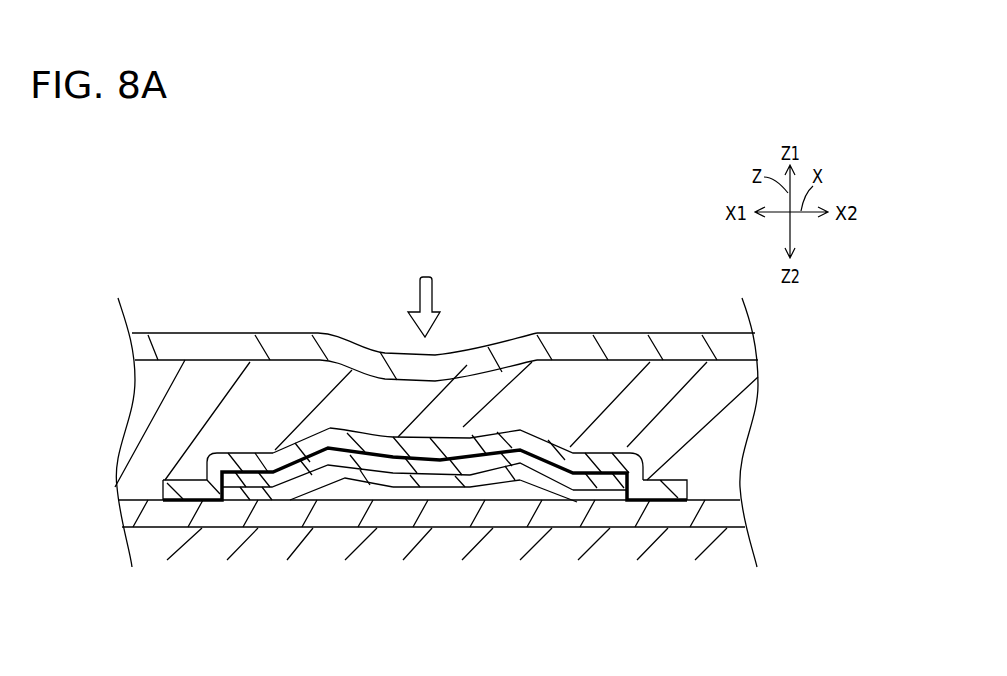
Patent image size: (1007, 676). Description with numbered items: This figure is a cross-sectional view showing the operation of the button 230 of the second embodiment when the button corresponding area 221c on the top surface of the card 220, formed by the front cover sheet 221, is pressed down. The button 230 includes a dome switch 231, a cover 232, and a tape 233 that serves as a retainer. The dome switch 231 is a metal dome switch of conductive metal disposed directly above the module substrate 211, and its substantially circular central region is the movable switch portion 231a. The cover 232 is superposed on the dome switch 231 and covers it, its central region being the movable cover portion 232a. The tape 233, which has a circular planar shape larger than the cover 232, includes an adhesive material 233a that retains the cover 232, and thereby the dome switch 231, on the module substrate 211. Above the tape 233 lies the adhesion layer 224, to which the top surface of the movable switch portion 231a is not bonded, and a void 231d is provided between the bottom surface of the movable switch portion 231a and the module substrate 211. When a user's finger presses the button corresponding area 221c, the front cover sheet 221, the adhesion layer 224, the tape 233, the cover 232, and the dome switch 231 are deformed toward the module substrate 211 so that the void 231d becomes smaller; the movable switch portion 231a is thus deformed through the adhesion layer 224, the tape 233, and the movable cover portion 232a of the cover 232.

The module substrate 211 is at (155, 520).
The card 220 is at (624, 216).
The front cover sheet 221 is at (180, 347).
The button corresponding area 221c is at (495, 325).
The adhesion layer 224 is at (740, 542).
The button 230 is at (247, 437).
The dome switch 231 is at (267, 487).
The movable switch portion 231a is at (423, 482).
The void 231d is at (523, 493).
The cover 232 is at (333, 458).
The movable cover portion 232a is at (463, 470).
The tape 233 is at (283, 447).
The adhesive material 233a is at (305, 447).